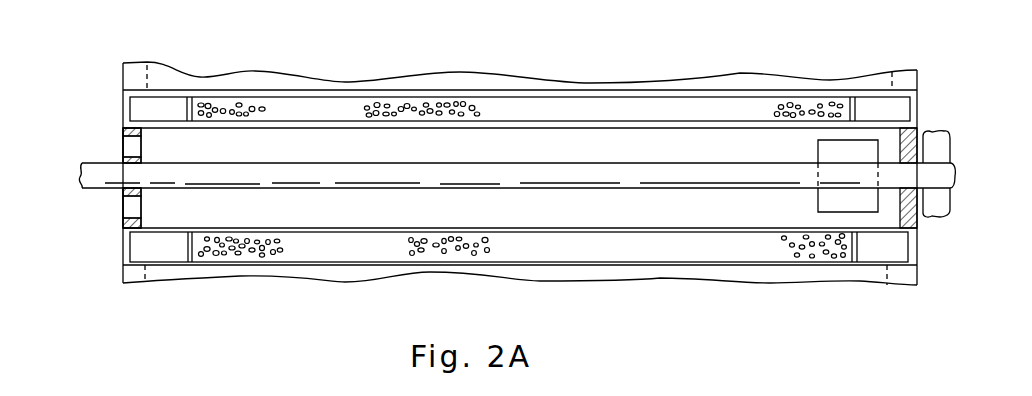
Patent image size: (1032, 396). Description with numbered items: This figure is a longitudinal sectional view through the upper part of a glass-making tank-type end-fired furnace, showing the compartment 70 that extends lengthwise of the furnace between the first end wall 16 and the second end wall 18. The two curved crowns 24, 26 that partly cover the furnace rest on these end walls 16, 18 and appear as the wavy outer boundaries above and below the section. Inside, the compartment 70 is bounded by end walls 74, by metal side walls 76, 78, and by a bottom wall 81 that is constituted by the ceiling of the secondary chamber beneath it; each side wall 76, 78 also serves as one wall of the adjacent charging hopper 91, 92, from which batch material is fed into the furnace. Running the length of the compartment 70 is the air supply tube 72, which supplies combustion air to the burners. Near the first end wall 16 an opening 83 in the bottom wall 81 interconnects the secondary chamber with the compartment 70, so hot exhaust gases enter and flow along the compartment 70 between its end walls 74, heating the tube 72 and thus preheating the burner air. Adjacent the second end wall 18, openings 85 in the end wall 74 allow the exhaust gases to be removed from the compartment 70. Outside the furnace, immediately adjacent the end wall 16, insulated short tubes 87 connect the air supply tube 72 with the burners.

The first end wall 16 is at (919, 69).
The second end wall 18 is at (135, 79).
The curved crown 24 is at (521, 271).
The curved crown 26 is at (478, 89).
The compartment 70 is at (655, 148).
The air supply tube 72 is at (270, 176).
The end walls 74 is at (123, 195).
The side wall 76 is at (491, 128).
The side wall 78 is at (478, 228).
The bottom wall 81 is at (658, 232).
The opening 83 is at (833, 154).
The openings 85 is at (132, 146).
The short tubes 87 is at (940, 145).
The charging hopper 91 is at (303, 115).
The charging hopper 92 is at (354, 240).